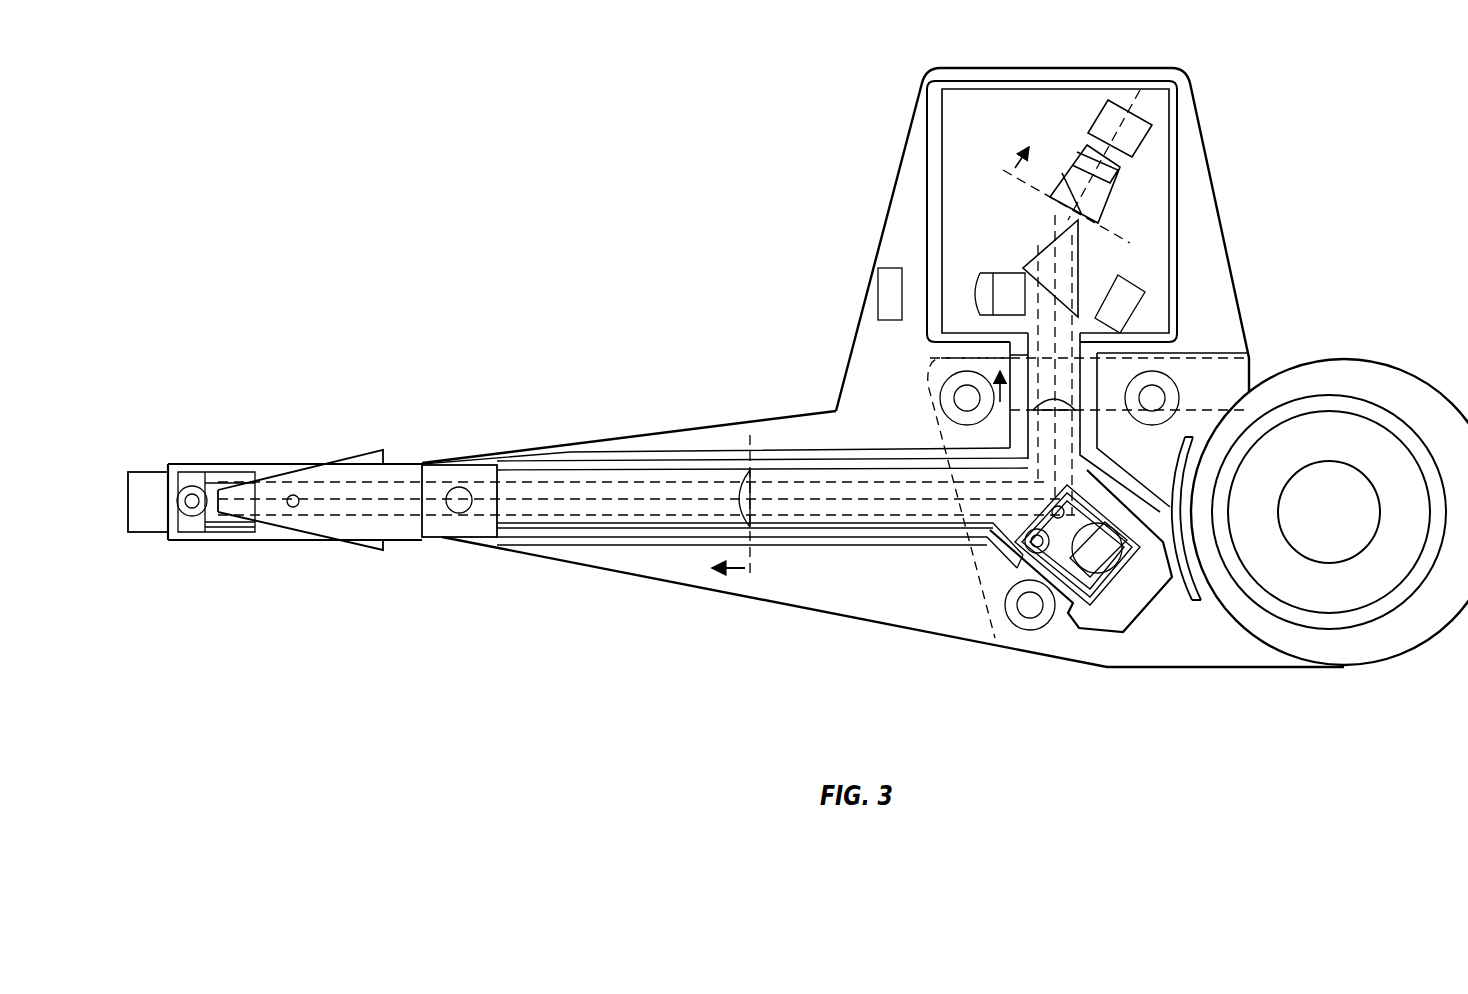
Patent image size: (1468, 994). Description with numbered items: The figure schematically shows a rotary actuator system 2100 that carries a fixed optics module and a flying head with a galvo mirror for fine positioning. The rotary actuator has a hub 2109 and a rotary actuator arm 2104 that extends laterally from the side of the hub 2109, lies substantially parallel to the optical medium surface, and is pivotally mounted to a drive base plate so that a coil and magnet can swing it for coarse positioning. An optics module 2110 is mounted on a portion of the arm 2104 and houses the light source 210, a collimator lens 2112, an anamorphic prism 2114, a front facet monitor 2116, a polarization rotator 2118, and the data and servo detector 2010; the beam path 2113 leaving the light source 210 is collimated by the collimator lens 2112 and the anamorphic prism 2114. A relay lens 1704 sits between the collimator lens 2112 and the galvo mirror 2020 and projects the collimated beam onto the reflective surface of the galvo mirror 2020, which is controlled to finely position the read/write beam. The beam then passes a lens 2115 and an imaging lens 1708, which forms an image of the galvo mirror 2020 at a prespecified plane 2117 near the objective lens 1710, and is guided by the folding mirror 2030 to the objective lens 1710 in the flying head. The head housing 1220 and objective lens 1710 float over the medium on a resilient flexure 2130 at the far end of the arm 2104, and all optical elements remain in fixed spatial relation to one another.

The rotary actuator system 2100 is at (396, 699).
The optics module 2110 is at (985, 68).
The light source 210 is at (1148, 133).
The collimator lens 2112 is at (1105, 212).
The laser beam path 2113 is at (1024, 186).
The polarization rotator 2118 is at (1002, 273).
The anamorphic prism 2114 is at (1080, 285).
The front facet monitor 2116 is at (1135, 302).
The data and servo detector 2010 is at (885, 262).
The relay lens 1704 is at (1083, 397).
The focusing lens 2115 is at (1057, 410).
The galvo mirror 2020 is at (1027, 527).
The hub 2109 is at (1378, 362).
The rotary actuator arm 2104 is at (948, 640).
The image plane 2117 is at (752, 508).
The imaging lens 1708 is at (735, 516).
The resilient flexure 2130 is at (368, 450).
The objective lens 1710 is at (190, 484).
The folding mirror 2030 is at (143, 532).
The tip housing 1220 is at (245, 528).